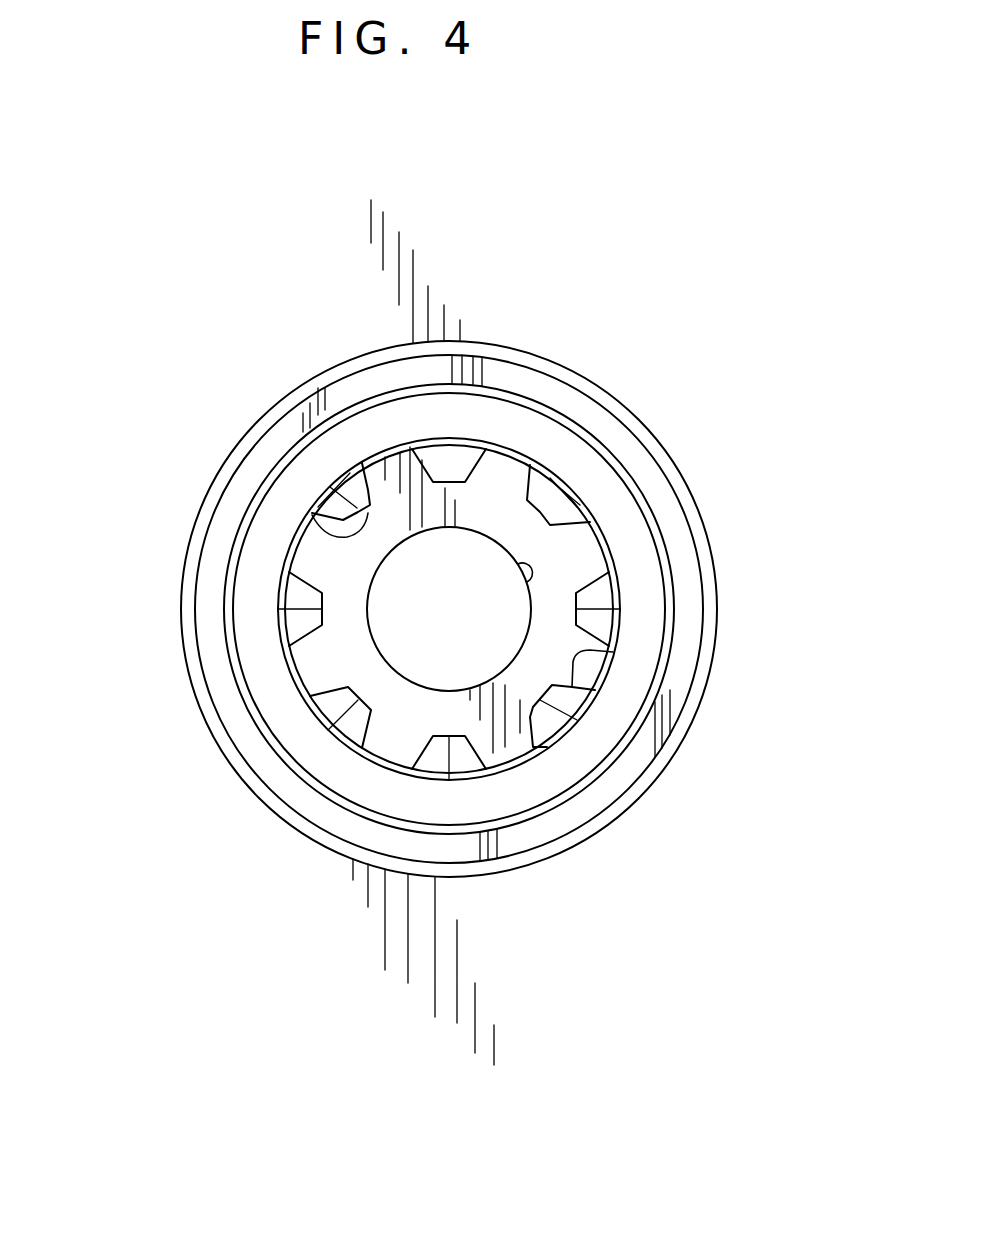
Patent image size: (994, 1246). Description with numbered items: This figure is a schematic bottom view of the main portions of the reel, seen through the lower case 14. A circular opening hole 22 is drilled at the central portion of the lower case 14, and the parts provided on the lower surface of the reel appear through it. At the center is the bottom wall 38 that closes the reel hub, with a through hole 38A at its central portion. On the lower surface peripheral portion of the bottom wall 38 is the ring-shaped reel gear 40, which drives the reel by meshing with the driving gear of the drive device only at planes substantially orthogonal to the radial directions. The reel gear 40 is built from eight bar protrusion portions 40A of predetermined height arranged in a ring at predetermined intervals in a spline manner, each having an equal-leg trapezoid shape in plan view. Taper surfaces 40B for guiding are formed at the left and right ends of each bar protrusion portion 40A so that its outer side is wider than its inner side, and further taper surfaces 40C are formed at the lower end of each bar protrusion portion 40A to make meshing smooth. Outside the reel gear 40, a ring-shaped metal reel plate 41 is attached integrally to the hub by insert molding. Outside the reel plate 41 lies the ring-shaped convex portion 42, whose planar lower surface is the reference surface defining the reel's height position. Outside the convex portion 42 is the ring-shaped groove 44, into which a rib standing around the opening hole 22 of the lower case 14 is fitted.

The lower case 14 is at (528, 292).
The opening hole 22 is at (276, 421).
The bottom wall 38 is at (503, 510).
The through hole 38A is at (530, 583).
The reel gear 40 is at (325, 628).
The bar protrusion portion 40A is at (340, 522).
The taper surface 40B is at (605, 650).
The taper surface 40C is at (447, 462).
The reel plate 41 is at (600, 485).
The convex portion 42 is at (210, 667).
The ring shaped groove 44 is at (182, 597).